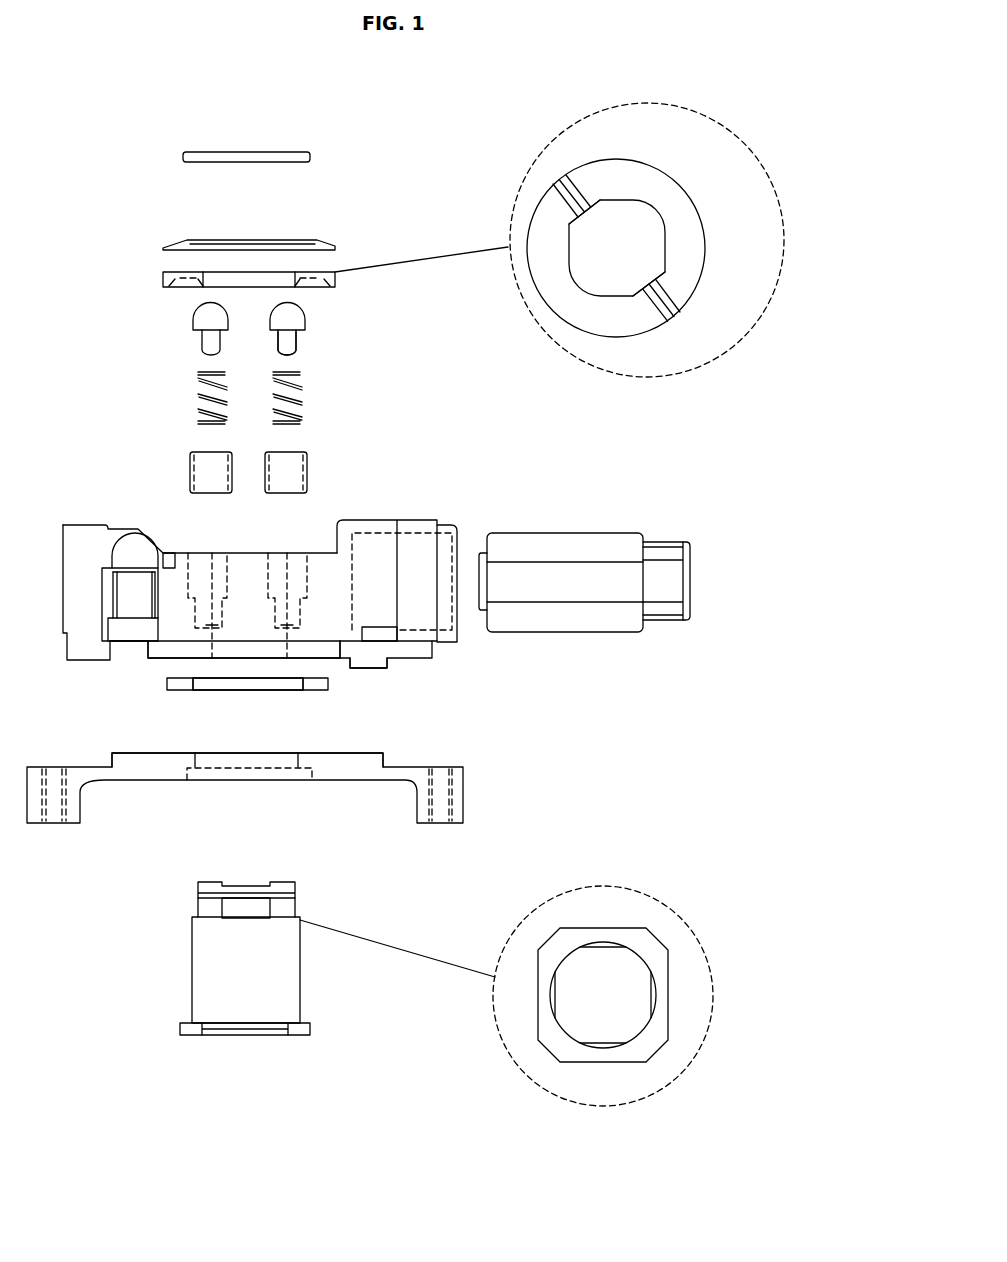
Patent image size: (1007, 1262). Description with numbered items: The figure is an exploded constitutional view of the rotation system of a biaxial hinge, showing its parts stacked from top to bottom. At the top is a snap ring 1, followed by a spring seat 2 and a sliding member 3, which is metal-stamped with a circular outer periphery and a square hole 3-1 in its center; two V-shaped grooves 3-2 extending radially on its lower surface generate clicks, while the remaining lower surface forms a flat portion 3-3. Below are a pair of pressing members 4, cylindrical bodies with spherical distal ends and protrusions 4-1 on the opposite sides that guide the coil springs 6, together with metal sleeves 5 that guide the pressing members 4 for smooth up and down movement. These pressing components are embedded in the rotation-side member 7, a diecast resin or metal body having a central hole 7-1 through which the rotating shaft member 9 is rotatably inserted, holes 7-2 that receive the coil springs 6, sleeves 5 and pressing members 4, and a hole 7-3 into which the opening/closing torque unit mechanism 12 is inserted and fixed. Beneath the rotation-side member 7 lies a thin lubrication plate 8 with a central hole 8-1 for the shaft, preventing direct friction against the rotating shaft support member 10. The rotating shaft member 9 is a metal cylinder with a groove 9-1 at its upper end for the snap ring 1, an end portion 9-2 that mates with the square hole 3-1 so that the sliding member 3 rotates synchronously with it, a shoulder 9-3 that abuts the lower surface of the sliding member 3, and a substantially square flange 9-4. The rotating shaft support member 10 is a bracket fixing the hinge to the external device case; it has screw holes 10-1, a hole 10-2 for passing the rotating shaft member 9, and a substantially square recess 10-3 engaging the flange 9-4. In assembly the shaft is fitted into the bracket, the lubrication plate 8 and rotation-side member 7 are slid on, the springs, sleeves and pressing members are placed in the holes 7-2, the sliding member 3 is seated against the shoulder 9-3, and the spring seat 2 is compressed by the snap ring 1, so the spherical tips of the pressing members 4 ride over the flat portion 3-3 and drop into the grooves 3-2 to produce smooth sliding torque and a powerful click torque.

The snap ring 1 is at (310, 155).
The spring seat 2 is at (335, 245).
The sliding member 3 is at (335, 283).
The square hole 3-1 is at (625, 245).
The V-shaped grooves 3-2 is at (583, 180).
The flat portion 3-3 is at (663, 250).
The pressing members 4 is at (297, 330).
The protrusions 4-1 is at (287, 345).
The sleeves 5 is at (292, 468).
The coil springs 6 is at (297, 394).
The rotation-side member 7 is at (93, 549).
The hole 7-1 is at (250, 627).
The holes 7-2 is at (202, 565).
The hole 7-3 is at (413, 587).
The lubrication plate 8 is at (312, 683).
The hole 8-1 is at (235, 683).
The rotating shaft member 9 is at (300, 953).
The groove 9-1 is at (200, 890).
The end portion 9-2 is at (353, 898).
The shoulder 9-3 is at (193, 917).
The flange 9-4 is at (187, 1030).
The rotating shaft support member 10 is at (343, 780).
The screw holes 10-1 is at (514, 851).
The hole 10-2 is at (250, 760).
The recess 10-3 is at (183, 773).
The opening/closing torque unit mechanism 12 is at (567, 575).